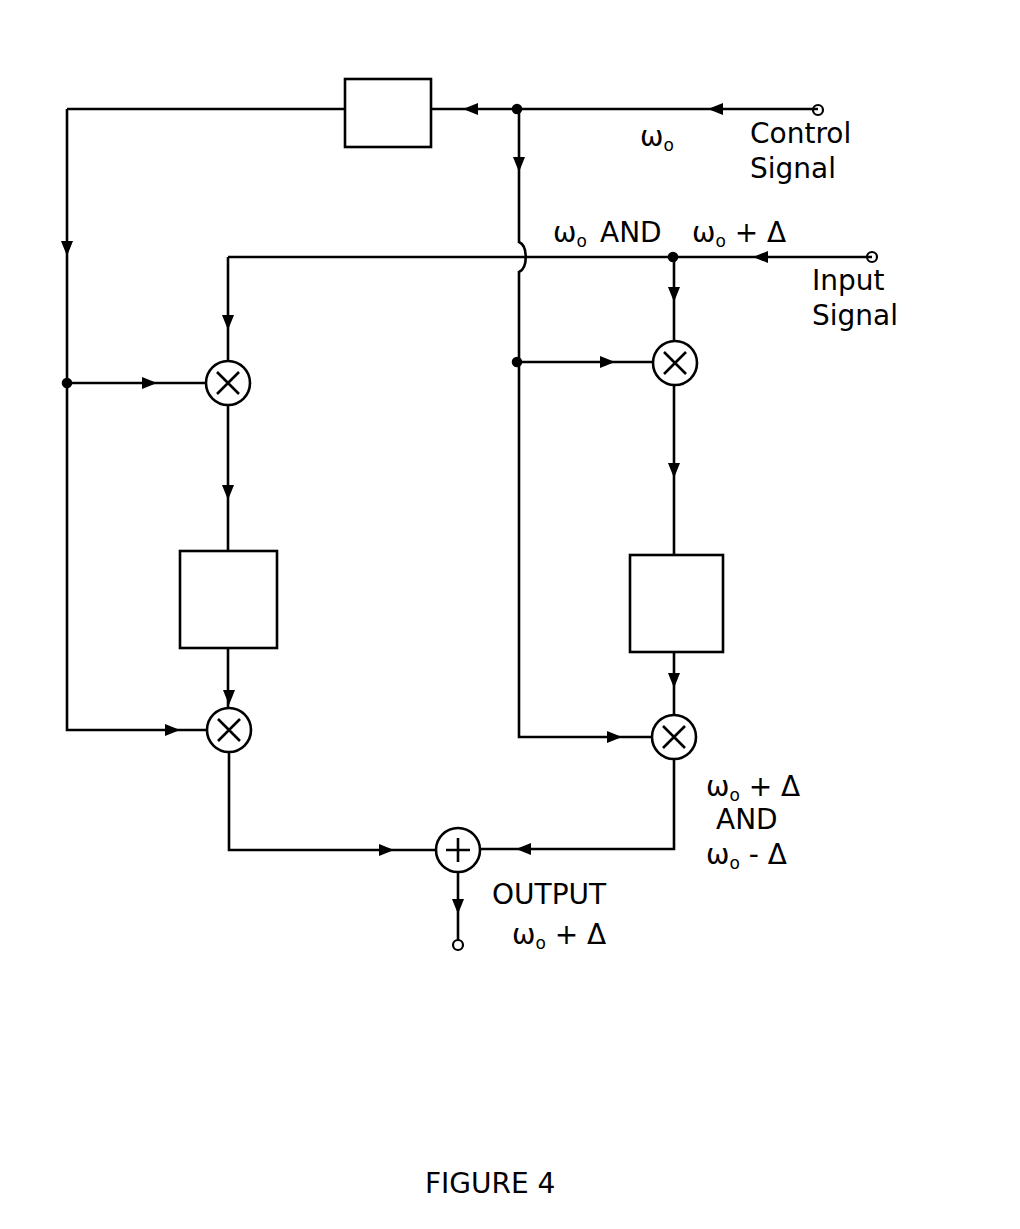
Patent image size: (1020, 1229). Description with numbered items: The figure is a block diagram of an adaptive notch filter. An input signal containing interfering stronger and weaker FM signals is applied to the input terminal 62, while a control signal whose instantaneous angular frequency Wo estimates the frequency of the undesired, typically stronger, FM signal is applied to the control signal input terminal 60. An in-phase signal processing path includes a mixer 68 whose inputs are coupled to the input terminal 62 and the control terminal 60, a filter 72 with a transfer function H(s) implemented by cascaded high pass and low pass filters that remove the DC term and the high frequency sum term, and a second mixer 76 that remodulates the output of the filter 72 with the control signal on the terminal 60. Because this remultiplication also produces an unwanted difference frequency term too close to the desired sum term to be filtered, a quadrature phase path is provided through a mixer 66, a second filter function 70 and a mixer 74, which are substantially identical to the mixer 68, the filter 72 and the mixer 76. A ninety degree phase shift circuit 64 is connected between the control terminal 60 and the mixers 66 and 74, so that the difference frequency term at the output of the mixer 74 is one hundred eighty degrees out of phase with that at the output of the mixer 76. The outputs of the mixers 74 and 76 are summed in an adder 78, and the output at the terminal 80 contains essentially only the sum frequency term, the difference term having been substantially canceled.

The control signal input terminal 60 is at (821, 105).
The input terminal 62 is at (875, 252).
The 90 degree phase shift circuit 64 is at (418, 79).
The mixer 66 is at (250, 376).
The mixer 68 is at (697, 368).
The second filter function 70 is at (277, 593).
The filter 72 is at (723, 600).
The mixer 74 is at (251, 725).
The second mixer 76 is at (696, 732).
The adder 78 is at (472, 792).
The output terminal 80 is at (453, 948).